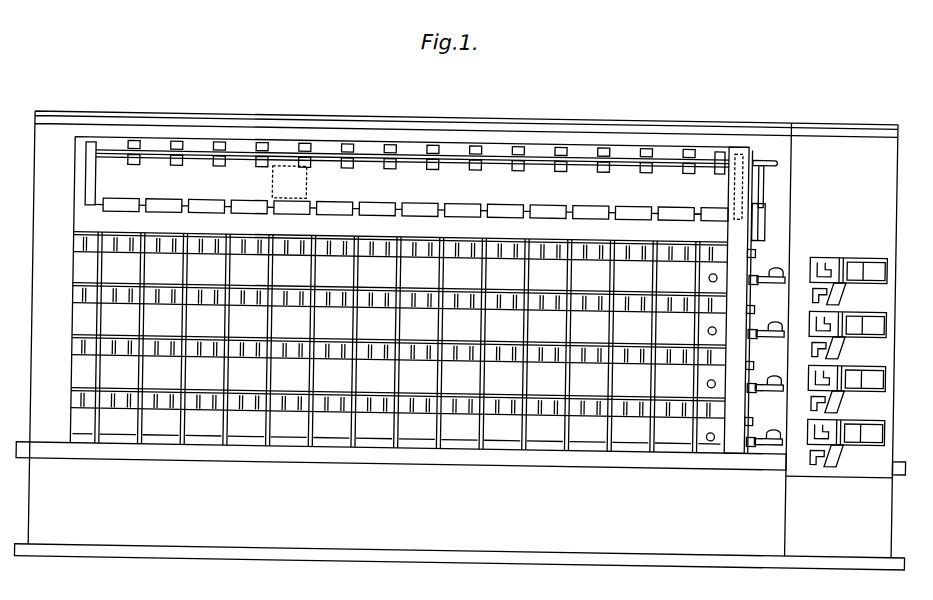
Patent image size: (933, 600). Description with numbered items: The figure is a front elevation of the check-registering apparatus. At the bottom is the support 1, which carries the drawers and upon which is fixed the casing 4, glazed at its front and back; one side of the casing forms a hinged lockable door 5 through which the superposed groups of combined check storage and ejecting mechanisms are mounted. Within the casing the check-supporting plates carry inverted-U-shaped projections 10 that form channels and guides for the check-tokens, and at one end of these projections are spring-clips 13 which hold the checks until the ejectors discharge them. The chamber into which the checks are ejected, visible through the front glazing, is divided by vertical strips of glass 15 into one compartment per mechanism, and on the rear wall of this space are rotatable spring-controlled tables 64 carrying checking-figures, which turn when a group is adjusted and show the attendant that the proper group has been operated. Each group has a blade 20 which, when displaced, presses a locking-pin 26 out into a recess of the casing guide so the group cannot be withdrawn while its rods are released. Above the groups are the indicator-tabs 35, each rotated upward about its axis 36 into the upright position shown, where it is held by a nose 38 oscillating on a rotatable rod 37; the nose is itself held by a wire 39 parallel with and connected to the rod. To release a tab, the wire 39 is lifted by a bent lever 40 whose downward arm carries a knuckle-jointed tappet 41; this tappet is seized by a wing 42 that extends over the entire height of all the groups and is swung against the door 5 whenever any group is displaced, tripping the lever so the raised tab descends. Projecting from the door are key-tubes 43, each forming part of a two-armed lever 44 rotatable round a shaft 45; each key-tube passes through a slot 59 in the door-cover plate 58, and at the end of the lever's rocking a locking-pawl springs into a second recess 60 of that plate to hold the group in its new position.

The support 1 is at (470, 506).
The casing 4 is at (44, 316).
The door 5 is at (877, 323).
The inverted-U-shaped projections 10 is at (289, 182).
The spring-clips 13 is at (145, 245).
The vertical strips of glass 15 is at (99, 432).
The blade 20 is at (768, 279).
The locking-pin 26 is at (706, 275).
The indicator-tab 35 is at (210, 206).
The axis 36 is at (438, 213).
The rotatable rod 37 is at (118, 165).
The nose 38 is at (179, 166).
The wire 39 is at (367, 163).
The bent lever 40 is at (762, 182).
The knuckle-jointed tappet 41 is at (768, 232).
The wing 42 is at (747, 240).
The key-tube 43 is at (878, 426).
The two-armed lever 44 is at (805, 452).
The shaft 45 is at (821, 410).
The door-cover plate 58 is at (869, 473).
The slot 59 is at (820, 260).
The second recess 60 is at (822, 291).
The rotatable spring-controlled tables 64 is at (754, 250).